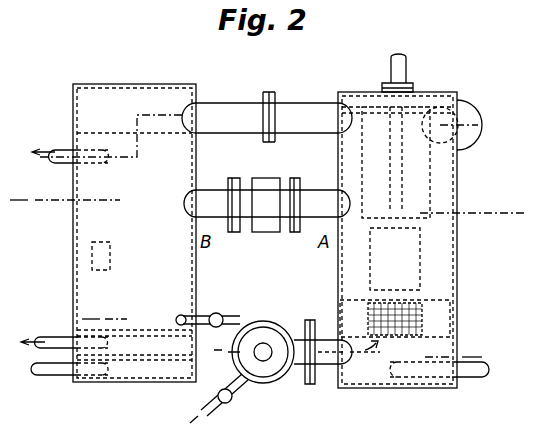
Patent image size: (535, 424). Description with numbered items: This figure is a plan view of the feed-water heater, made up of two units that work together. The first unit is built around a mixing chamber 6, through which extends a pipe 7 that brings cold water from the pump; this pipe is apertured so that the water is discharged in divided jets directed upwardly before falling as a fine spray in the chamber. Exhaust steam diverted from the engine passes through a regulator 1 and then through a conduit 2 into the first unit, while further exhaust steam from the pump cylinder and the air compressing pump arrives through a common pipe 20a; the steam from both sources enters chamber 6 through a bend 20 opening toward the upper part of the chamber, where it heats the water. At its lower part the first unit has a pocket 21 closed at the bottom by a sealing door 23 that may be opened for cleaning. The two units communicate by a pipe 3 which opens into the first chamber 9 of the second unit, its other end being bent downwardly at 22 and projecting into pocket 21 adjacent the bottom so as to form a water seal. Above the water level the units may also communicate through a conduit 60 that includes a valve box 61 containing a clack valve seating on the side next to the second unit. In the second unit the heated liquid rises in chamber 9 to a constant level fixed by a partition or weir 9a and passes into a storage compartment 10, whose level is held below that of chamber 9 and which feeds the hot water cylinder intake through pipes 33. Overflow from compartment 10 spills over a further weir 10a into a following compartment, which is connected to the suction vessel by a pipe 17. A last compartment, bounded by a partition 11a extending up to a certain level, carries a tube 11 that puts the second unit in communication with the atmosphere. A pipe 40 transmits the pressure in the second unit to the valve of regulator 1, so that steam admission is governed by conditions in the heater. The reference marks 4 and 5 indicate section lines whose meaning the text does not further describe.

The regulator 1 is at (275, 332).
The conduit 2 is at (334, 375).
The pipe 3 is at (300, 113).
The section line 4 is at (282, 329).
The pump suction pipe 5 is at (215, 398).
The mixing chamber 6 is at (452, 222).
The pipe 7 is at (405, 118).
The first chamber 9 is at (86, 109).
The partition or weir 9a is at (117, 128).
The compartment 10 is at (85, 212).
The partition or weir 10a is at (175, 344).
The tube 11 is at (55, 378).
The partition 11a is at (135, 369).
The pipe 17 is at (51, 343).
The bend 20 is at (429, 270).
The common pipe 20a is at (470, 378).
The pocket 21 is at (476, 106).
The bent end 22 is at (402, 44).
The sealing door 23 is at (452, 9).
The pipes 33 is at (67, 156).
The pipe 40 is at (228, 314).
The conduit 60 is at (211, 195).
The valve box 61 is at (270, 190).